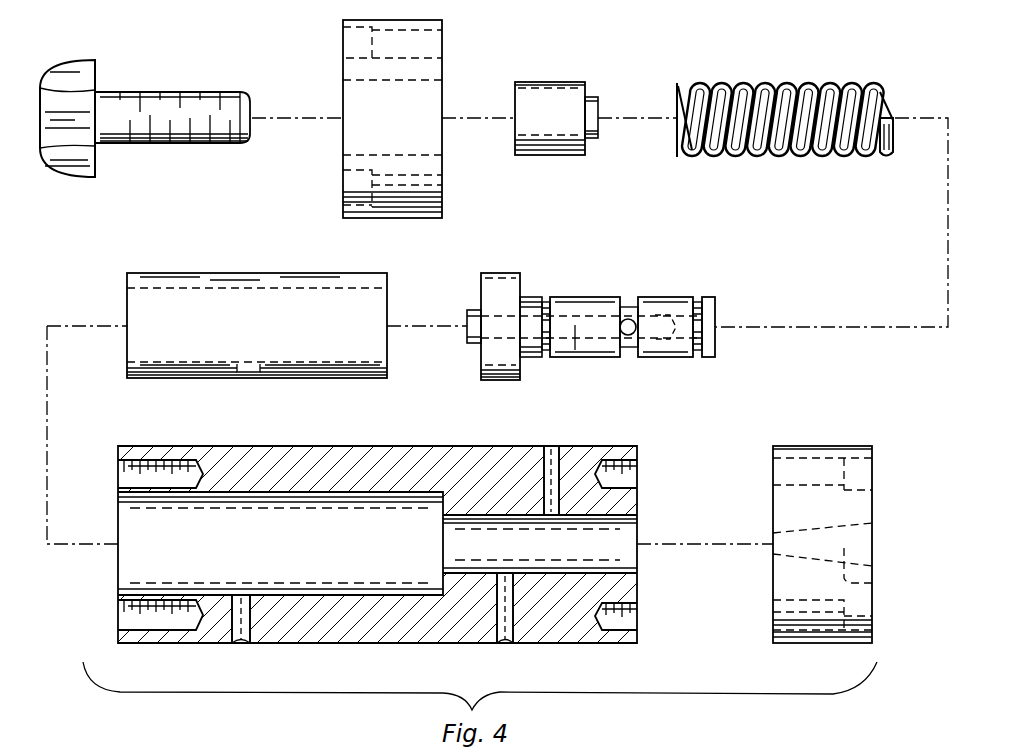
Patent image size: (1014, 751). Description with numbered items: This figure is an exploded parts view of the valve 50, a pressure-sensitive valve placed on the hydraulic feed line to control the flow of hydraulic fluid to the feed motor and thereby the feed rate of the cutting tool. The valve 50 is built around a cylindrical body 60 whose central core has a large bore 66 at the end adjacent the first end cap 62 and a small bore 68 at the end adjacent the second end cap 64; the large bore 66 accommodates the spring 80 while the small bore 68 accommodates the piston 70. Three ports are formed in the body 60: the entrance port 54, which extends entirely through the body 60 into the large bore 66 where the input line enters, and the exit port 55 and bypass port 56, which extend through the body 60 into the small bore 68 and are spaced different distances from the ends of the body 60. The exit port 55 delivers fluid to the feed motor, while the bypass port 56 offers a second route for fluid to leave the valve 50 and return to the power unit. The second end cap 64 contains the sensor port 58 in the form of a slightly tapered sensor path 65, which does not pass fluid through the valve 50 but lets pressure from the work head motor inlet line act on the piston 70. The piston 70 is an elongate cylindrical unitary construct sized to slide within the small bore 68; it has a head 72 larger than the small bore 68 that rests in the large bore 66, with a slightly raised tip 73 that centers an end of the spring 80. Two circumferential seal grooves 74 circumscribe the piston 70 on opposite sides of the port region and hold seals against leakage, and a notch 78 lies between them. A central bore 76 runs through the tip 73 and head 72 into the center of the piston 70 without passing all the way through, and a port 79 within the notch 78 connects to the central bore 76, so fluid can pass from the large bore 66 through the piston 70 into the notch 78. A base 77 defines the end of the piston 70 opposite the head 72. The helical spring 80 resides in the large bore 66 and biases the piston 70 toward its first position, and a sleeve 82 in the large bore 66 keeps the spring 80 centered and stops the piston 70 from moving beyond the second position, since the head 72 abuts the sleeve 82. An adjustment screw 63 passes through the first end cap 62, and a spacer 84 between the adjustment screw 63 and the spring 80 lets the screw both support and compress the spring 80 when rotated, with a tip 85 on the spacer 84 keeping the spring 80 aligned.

The valve 50 is at (785, 120).
The entrance port 54 is at (238, 645).
The exit port 55 is at (552, 460).
The bypass port 56 is at (508, 645).
The sensor port 58 is at (872, 540).
The body 60 is at (377, 539).
The first end cap 62 is at (442, 95).
The adjustment screw 63 is at (105, 100).
The second end cap 64 is at (854, 521).
The sensor path 65 is at (872, 583).
The large bore 66 is at (240, 556).
The small bore 68 is at (509, 558).
The piston 70 is at (594, 295).
The head 72 is at (500, 272).
The tip 73 is at (470, 312).
The seal grooves 74 is at (547, 302).
The central bore 76 is at (576, 356).
The base 77 is at (715, 300).
The notch 78 is at (628, 350).
The port 79 is at (633, 310).
The spring 80 is at (800, 168).
The sleeve 82 is at (235, 262).
The spacer 84 is at (545, 66).
The tip 85 is at (589, 96).